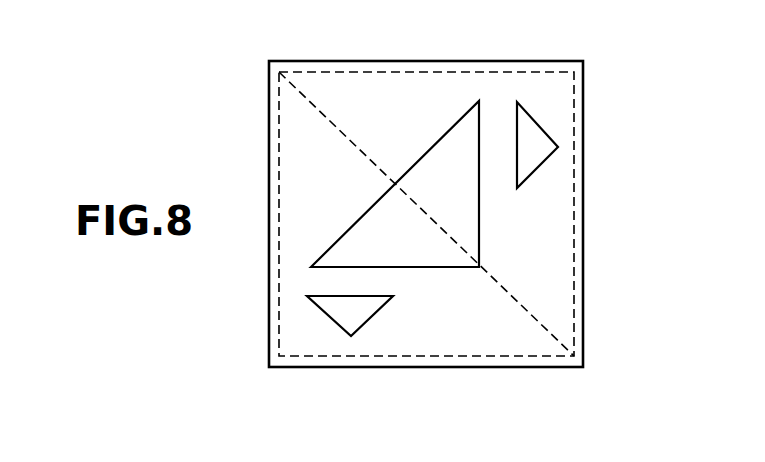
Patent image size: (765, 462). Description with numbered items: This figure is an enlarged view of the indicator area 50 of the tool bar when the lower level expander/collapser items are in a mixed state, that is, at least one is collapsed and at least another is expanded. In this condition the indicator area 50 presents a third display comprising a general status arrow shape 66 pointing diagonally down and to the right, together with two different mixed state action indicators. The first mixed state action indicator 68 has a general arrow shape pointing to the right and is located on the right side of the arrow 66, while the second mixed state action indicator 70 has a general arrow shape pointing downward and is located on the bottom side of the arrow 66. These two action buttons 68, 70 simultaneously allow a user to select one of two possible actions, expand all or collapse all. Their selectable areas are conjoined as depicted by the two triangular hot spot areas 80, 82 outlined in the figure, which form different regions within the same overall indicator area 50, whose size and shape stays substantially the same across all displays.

The indicator area 50 is at (573, 90).
The status arrow shape 66 is at (440, 250).
The first mixed state action indicator 68 is at (537, 146).
The second mixed state action indicator 70 is at (338, 313).
The triangular hot spot area 80 is at (538, 283).
The triangular hot spot area 82 is at (295, 185).